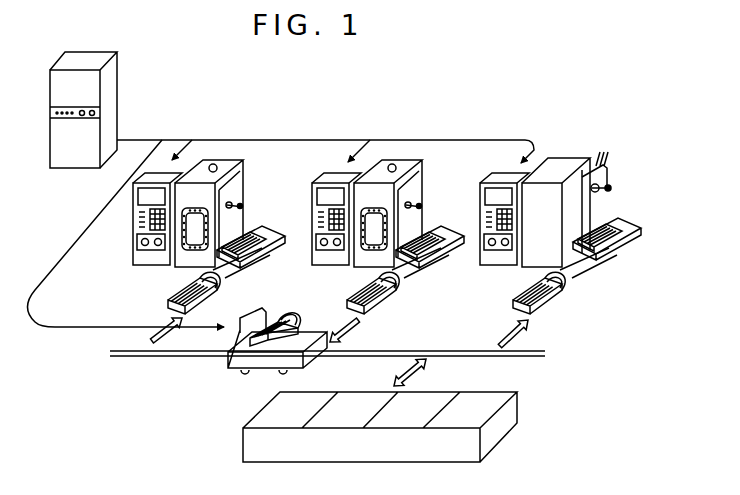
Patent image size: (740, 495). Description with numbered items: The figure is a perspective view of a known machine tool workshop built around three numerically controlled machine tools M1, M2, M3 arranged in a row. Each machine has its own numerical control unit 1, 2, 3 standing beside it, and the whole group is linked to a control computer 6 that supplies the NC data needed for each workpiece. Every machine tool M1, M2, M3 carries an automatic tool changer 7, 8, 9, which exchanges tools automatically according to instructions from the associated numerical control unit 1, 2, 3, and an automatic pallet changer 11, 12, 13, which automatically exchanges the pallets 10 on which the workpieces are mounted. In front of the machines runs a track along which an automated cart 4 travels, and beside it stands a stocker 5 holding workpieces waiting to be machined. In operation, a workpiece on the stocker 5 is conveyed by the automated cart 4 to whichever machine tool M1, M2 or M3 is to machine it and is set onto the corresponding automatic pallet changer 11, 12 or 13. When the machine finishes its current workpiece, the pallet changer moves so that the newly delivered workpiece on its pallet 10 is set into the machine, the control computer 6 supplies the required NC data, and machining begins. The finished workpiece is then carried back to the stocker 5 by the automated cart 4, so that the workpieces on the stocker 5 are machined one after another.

The numerical control unit 1 is at (138, 256).
The numerical control unit 2 is at (322, 175).
The numerical control unit 3 is at (488, 180).
The automated cart 4 is at (230, 364).
The stocker 5 is at (510, 415).
The control computer 6 is at (113, 107).
The automatic tool changer 7 is at (188, 254).
The automatic tool changer 8 is at (367, 254).
The automatic tool changer 9 is at (607, 177).
The pallet 10 is at (262, 355).
The automatic pallet changer 11 is at (230, 282).
The automatic pallet changer 12 is at (403, 283).
The automatic pallet changer 13 is at (572, 285).
The NC machine tool M1 is at (208, 168).
The NC machine tool M2 is at (385, 163).
The NC machine tool M3 is at (563, 162).